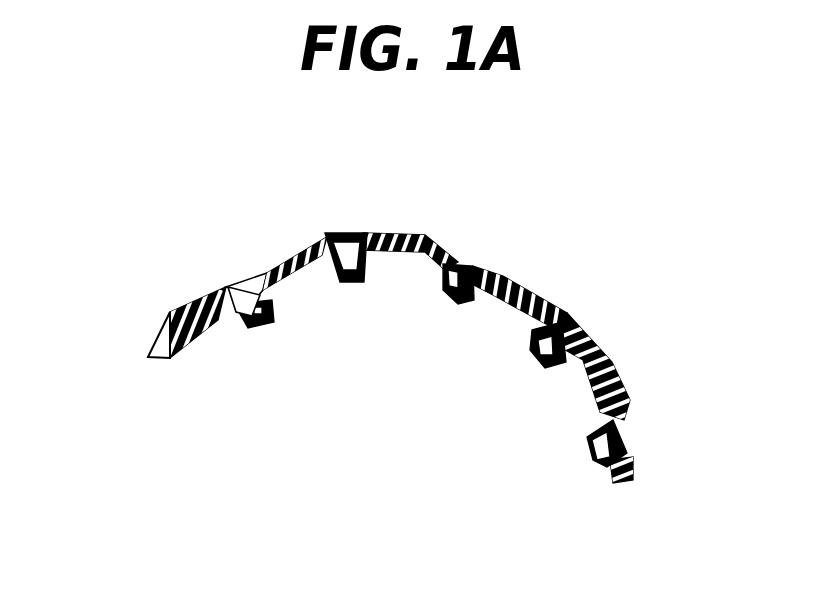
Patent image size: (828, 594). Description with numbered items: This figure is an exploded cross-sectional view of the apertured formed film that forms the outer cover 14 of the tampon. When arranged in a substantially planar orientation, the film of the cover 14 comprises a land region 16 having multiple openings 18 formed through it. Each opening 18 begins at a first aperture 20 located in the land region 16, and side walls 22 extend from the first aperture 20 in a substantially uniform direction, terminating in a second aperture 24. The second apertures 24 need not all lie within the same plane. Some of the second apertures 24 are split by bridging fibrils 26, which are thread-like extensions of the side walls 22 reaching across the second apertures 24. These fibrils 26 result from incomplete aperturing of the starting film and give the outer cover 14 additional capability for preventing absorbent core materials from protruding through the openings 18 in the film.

The outer cover 14 is at (160, 322).
The land region 16 is at (320, 238).
The opening 18 is at (232, 280).
The first aperture 20 is at (227, 285).
The side wall 22 is at (240, 326).
The second aperture 24 is at (257, 333).
The bridging fibril 26 is at (268, 320).